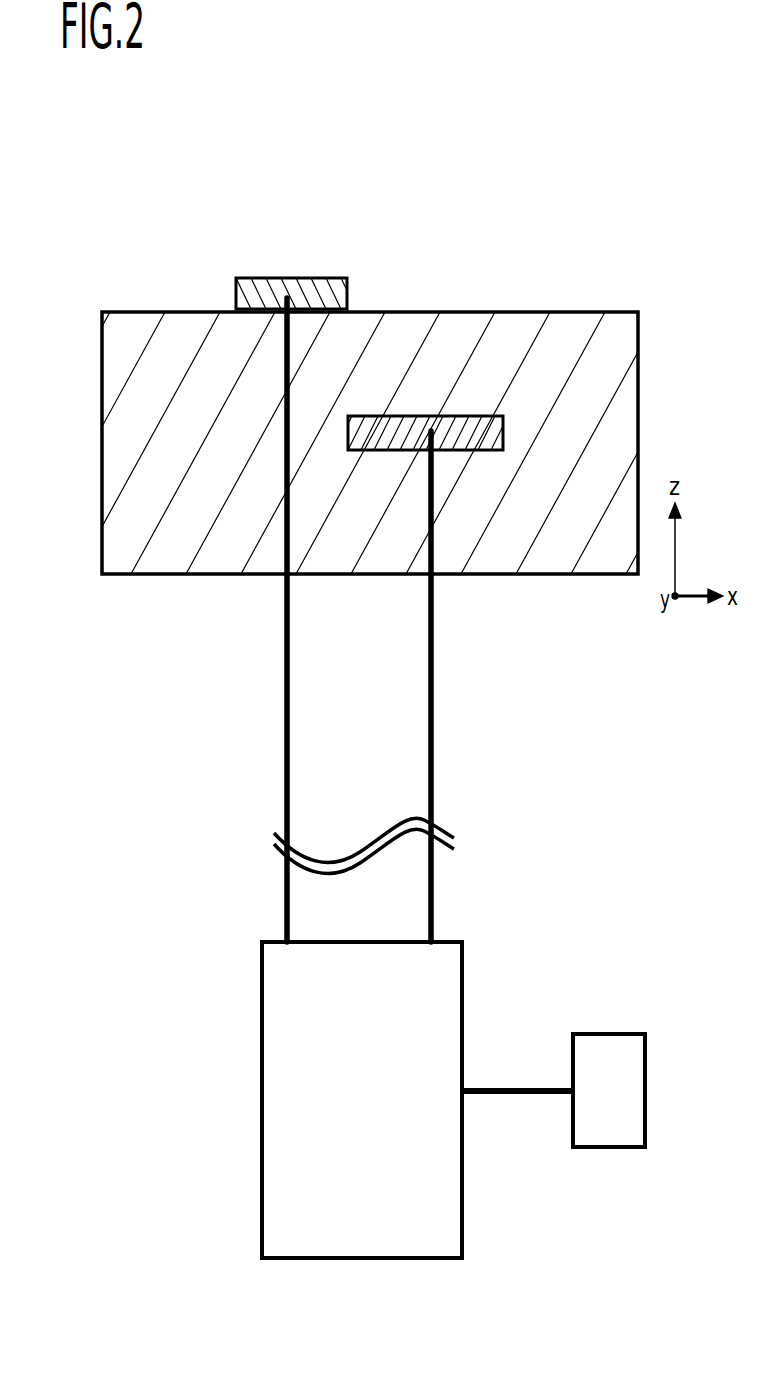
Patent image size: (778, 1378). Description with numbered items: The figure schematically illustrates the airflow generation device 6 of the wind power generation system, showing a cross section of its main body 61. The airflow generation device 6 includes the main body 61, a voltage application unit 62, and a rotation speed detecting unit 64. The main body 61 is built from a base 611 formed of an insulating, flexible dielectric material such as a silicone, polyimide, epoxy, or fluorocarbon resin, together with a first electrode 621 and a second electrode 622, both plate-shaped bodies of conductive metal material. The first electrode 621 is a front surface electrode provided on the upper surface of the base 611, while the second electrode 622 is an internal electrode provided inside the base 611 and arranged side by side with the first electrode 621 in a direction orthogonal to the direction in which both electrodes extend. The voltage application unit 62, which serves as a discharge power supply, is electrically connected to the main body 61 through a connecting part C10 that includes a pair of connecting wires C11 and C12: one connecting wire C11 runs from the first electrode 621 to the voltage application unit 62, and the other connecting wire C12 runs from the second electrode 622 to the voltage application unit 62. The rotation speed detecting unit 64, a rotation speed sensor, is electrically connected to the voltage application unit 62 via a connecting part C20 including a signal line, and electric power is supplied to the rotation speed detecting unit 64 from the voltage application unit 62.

The airflow generation device 6 is at (392, 122).
The main body 61 is at (428, 199).
The base 611 is at (178, 338).
The first electrode 621 is at (306, 291).
The second electrode 622 is at (408, 440).
The voltage application unit 62 is at (278, 1092).
The rotation speed detecting unit 64 is at (608, 1032).
The connecting part C10 is at (221, 690).
The connecting wire C11 is at (286, 780).
The connecting wire C12 is at (428, 712).
The connecting part C20 is at (524, 1083).